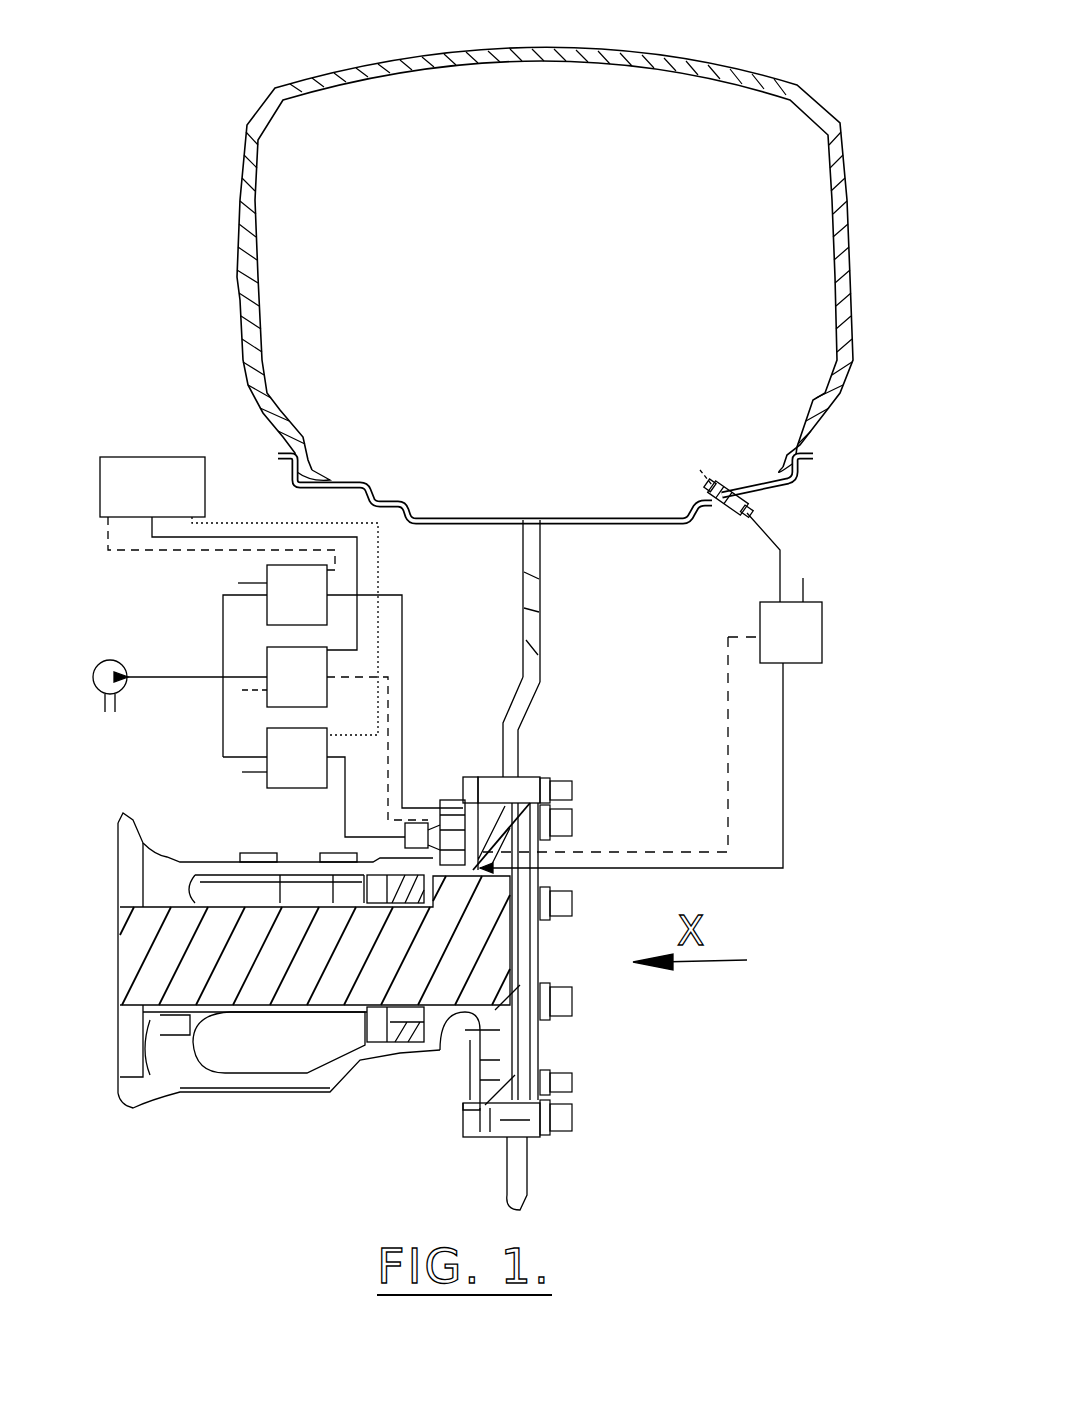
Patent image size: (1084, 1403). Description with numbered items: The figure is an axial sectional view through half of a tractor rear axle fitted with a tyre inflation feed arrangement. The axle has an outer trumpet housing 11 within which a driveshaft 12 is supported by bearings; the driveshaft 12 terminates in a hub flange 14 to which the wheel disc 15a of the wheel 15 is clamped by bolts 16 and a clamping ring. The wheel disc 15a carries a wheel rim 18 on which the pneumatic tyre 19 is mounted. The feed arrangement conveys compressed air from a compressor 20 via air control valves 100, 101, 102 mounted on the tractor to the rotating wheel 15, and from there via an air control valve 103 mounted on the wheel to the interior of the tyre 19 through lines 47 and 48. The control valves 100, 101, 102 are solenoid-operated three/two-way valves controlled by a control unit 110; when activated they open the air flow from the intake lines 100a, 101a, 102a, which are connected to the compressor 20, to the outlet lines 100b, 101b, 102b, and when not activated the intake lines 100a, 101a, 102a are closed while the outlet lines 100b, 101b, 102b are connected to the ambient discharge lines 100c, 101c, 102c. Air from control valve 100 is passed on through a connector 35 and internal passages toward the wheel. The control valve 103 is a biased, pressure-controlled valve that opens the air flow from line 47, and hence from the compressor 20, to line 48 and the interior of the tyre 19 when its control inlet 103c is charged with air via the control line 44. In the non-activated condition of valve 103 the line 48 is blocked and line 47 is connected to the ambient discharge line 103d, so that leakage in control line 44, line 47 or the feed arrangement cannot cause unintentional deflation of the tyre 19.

The pneumatic tyre 19 is at (412, 67).
The wheel rim 18 is at (557, 517).
The line 48 is at (770, 533).
The line 47 is at (785, 792).
The control line 44 is at (665, 850).
The air control valve 103 is at (791, 632).
The control inlet 103c is at (729, 636).
The ambient discharge line 103d is at (803, 586).
The control unit 110 is at (239, 596).
The air control valve 102 is at (297, 595).
The intake line 102a is at (228, 595).
The outlet line 102b is at (387, 595).
The ambient discharge line 102c is at (255, 578).
The air control valve 101 is at (297, 677).
The intake line 101a is at (240, 677).
The outlet line 101b is at (358, 676).
The ambient discharge line 101c is at (258, 690).
The air control valve 100 is at (297, 758).
The intake line 100a is at (242, 757).
The outlet line 100b is at (345, 773).
The ambient discharge line 100c is at (255, 772).
The compressor 20 is at (118, 649).
The outer trumpet housing 11 is at (147, 850).
The driveshaft 12 is at (217, 983).
The connector 35 is at (418, 837).
The bolts 16 is at (530, 790).
The wheel 15 is at (500, 545).
The wheel disc 15a is at (532, 671).
The hub flange 14 is at (496, 1070).